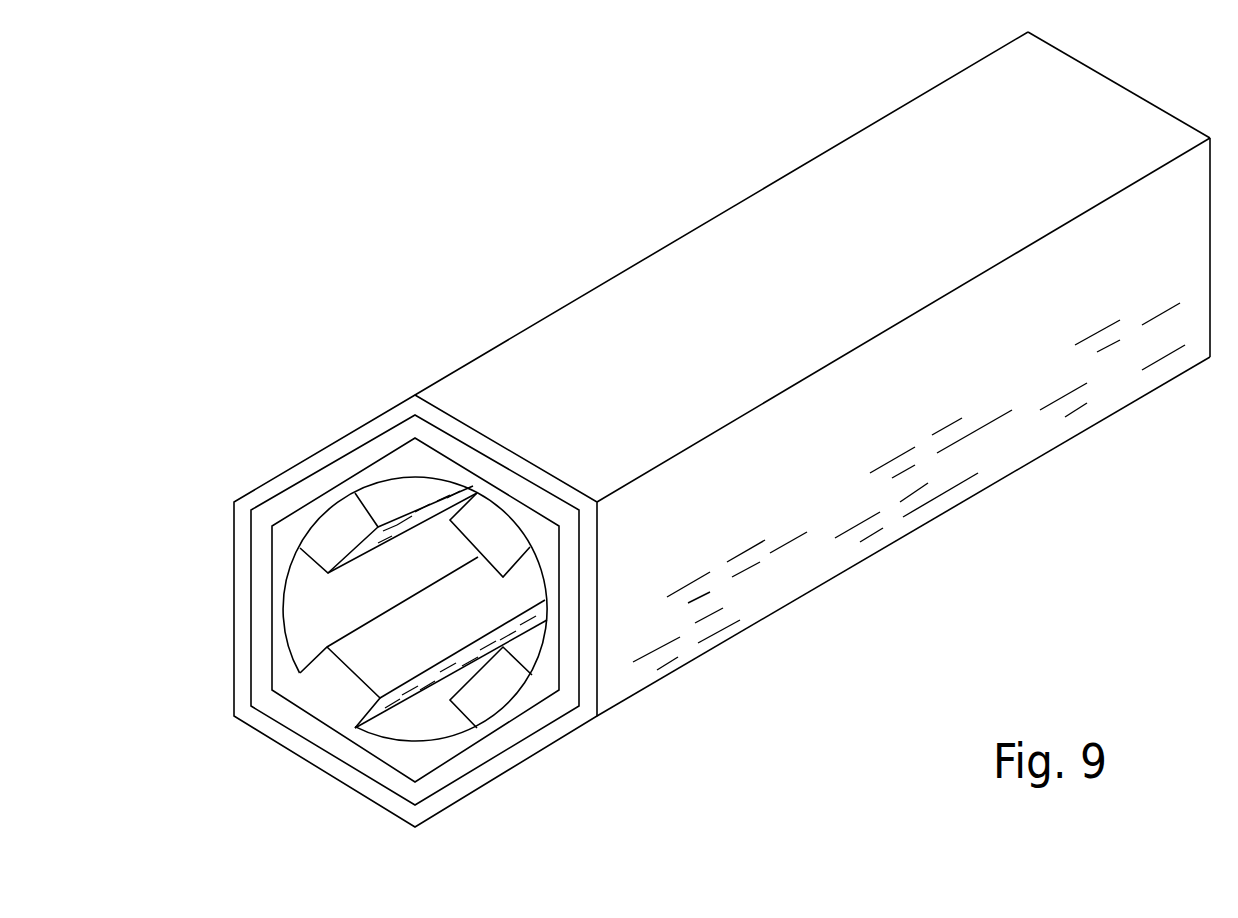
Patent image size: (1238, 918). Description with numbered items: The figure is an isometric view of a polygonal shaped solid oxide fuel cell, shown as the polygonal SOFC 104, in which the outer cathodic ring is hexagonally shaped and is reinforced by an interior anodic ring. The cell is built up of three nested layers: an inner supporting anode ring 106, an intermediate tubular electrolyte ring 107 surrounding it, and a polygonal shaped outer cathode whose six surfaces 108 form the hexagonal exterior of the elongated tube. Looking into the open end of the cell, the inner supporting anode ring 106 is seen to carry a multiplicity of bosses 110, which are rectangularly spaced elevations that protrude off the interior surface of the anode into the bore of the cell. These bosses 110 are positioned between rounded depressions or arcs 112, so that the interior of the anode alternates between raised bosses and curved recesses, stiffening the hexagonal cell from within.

The polygonal SOFC 104 is at (542, 203).
The inner supporting anode ring 106 is at (547, 677).
The intermediate tubular electrolyte ring 107 is at (262, 660).
The surfaces 108 is at (828, 203).
The bosses 110 is at (330, 692).
The rounded depressions or arcs 112 is at (322, 608).